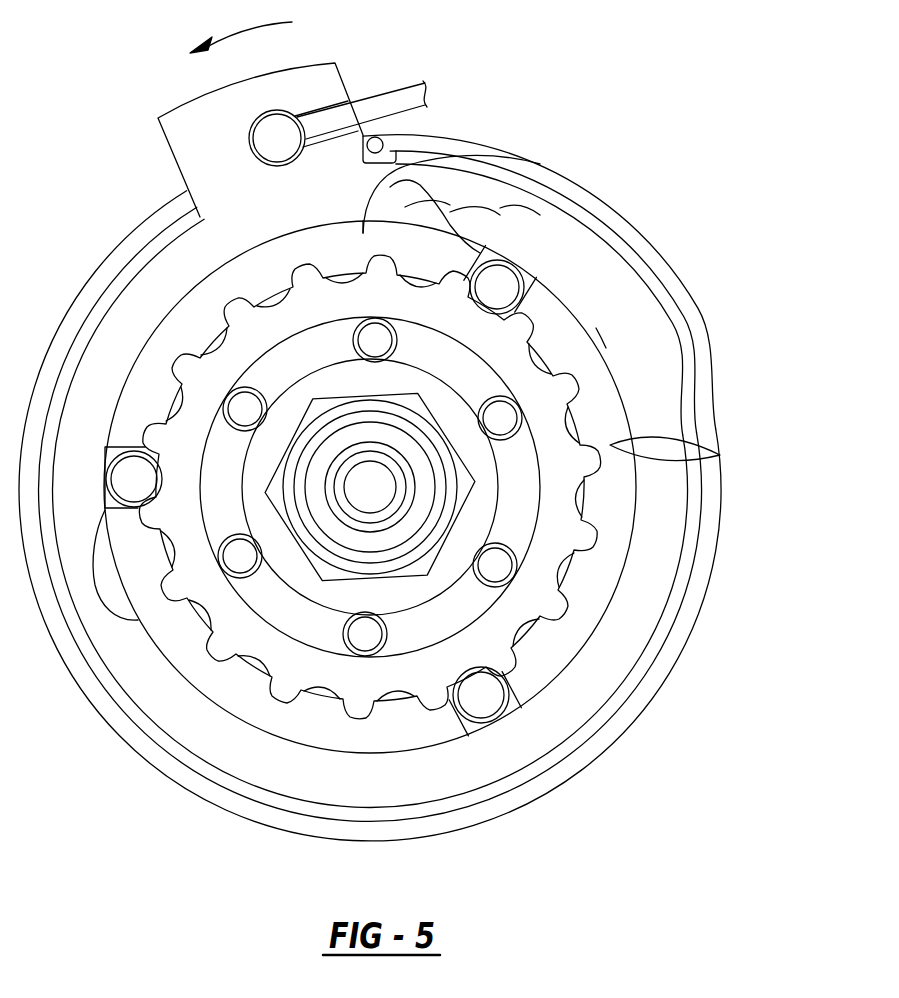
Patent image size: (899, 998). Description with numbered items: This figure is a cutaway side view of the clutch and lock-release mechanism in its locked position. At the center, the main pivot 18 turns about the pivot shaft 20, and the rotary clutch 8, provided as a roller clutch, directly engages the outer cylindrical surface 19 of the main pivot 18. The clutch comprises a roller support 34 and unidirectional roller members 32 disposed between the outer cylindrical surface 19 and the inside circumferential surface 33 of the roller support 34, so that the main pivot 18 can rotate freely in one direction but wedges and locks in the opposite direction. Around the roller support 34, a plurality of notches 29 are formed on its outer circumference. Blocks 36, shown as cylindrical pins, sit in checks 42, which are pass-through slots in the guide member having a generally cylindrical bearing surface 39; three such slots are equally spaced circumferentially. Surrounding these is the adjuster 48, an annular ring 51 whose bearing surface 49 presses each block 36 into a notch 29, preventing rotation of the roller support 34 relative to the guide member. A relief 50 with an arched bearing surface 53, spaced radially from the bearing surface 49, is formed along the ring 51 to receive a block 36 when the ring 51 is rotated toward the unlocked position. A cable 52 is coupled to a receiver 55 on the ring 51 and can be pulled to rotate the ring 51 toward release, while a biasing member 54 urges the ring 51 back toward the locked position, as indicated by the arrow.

The rotary clutch 8 is at (497, 570).
The main pivot 18 is at (483, 490).
The outer cylindrical surface 19 is at (493, 475).
The pivot shaft 20 is at (483, 490).
The notches 29 is at (600, 337).
The roller members 32 is at (425, 610).
The inside circumferential surface 33 is at (452, 545).
The roller support 34 is at (555, 418).
The block 36 is at (540, 250).
The bearing surface 39 is at (613, 381).
The check 42 is at (497, 287).
The adjuster 48 is at (520, 208).
The bearing surface 49 is at (363, 233).
The relief 50 is at (465, 209).
The ring 51 is at (613, 300).
The cable 52 is at (385, 104).
The arched bearing surface 53 is at (413, 207).
The biasing member 54 is at (97, 286).
The receiver 55 is at (220, 138).